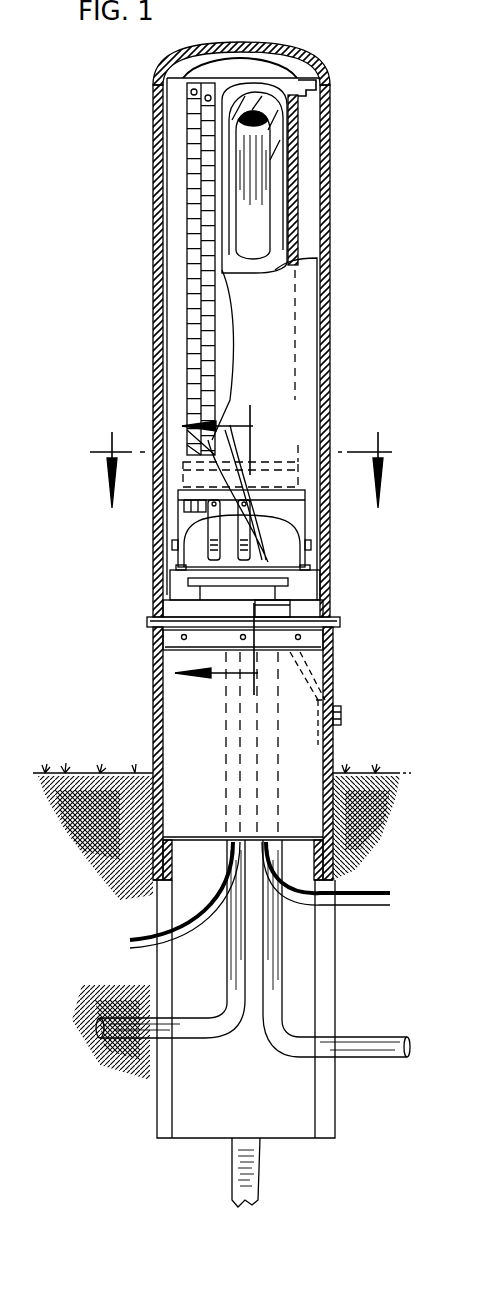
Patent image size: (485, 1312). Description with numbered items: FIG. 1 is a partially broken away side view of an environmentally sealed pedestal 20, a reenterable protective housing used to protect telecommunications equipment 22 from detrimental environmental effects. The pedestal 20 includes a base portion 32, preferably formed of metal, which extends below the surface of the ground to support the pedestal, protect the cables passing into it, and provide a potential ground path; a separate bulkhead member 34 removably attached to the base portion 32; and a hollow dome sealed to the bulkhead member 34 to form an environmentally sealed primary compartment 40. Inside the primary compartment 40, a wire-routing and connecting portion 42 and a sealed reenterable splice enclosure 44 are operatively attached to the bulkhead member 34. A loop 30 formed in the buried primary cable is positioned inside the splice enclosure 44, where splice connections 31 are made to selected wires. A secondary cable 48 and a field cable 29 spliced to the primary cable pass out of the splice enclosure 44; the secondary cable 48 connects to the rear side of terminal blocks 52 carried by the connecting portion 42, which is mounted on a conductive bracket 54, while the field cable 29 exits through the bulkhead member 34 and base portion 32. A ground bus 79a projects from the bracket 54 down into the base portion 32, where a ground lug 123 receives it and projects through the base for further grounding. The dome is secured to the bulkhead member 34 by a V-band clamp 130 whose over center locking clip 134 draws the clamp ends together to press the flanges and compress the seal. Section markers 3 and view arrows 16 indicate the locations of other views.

The environmentally sealed pedestal 20 is at (338, 151).
The telecommunications equipment 22 is at (176, 250).
The field cable 29 is at (132, 942).
The loop 30 is at (240, 60).
The splice connections 31 is at (258, 112).
The base portion 32 is at (153, 720).
The bulkhead member 34 is at (310, 637).
The primary compartment 40 is at (190, 70).
The wire-routing and connecting portion 42 is at (172, 311).
The sealed reenterable splice enclosure 44 is at (298, 130).
The secondary cable 48 is at (253, 235).
The terminal blocks 52 is at (195, 337).
The bracket 54 is at (166, 526).
The ground bus 79a is at (308, 672).
The ground lug 123 is at (341, 720).
The V-band clamp 130 is at (150, 622).
The over center locking clip 134 is at (262, 615).
The section line 3- 3 is at (240, 461).
The view arrow 16 is at (234, 549).